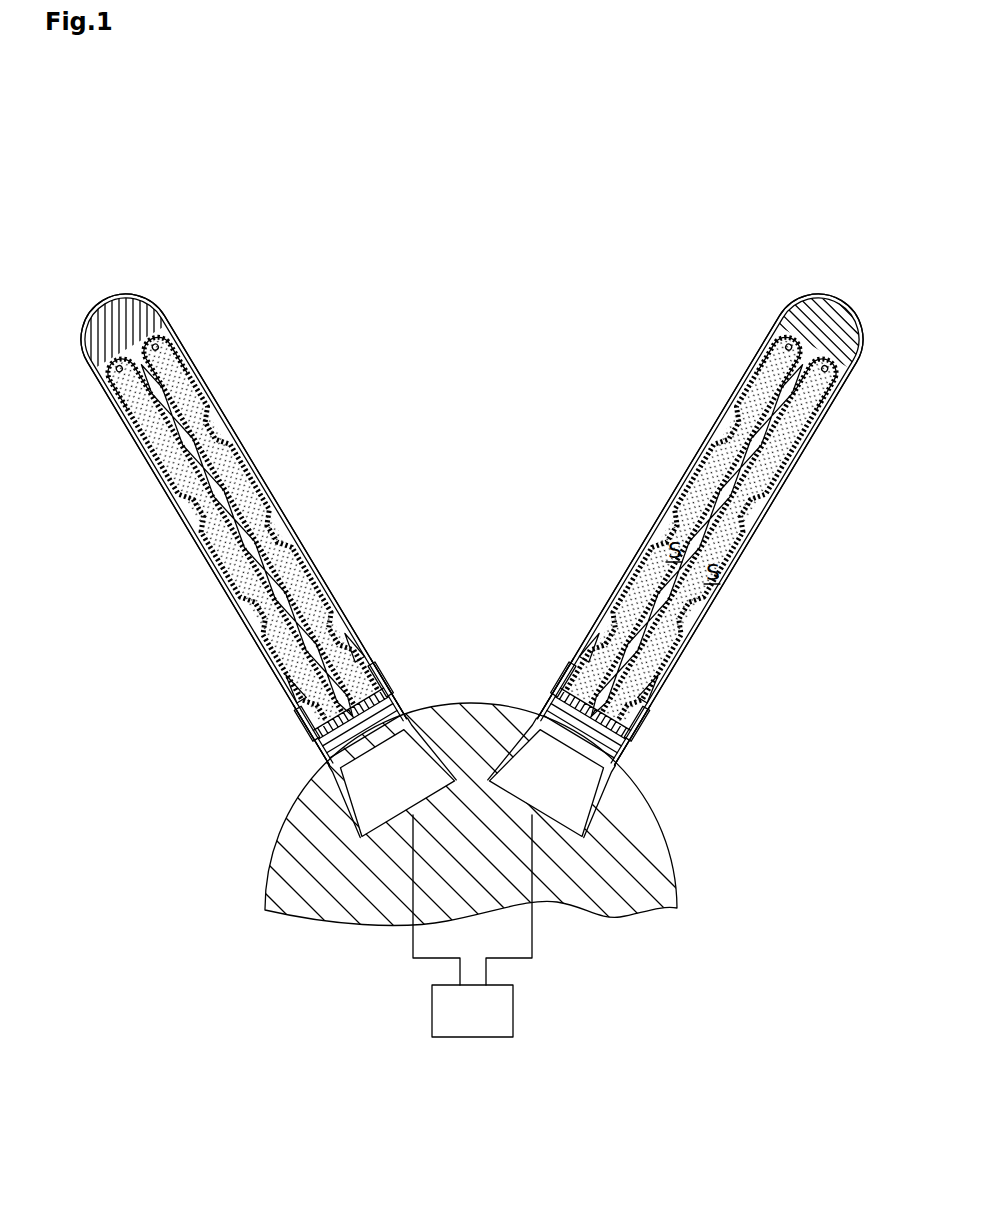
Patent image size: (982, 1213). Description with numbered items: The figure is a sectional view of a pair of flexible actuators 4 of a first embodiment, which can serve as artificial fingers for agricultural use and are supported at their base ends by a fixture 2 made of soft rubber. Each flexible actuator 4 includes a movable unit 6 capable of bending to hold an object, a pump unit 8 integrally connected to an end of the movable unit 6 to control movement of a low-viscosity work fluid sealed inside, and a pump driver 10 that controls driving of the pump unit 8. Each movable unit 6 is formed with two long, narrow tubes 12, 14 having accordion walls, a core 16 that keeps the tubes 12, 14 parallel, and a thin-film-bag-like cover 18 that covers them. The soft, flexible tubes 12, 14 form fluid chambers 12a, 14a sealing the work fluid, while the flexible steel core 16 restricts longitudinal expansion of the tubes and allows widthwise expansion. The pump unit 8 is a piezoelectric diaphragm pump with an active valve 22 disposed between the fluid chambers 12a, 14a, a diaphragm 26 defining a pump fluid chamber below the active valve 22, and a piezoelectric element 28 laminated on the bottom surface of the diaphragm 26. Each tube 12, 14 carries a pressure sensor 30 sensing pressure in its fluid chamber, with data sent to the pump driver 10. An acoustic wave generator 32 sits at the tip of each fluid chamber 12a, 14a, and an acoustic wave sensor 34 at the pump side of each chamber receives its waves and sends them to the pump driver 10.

The fixture 2 is at (275, 815).
The flexible actuator 4 is at (209, 298).
The movable unit 6 is at (266, 462).
The pump unit 8 is at (385, 655).
The pump driver 10 is at (458, 1021).
The tube 12 is at (230, 440).
The fluid chamber 12a is at (763, 377).
The tube 14 is at (235, 563).
The fluid chamber 14a is at (815, 396).
The core 16 is at (774, 494).
The cover 18 is at (745, 540).
The active valve 22 is at (620, 738).
The diaphragm 26 is at (620, 772).
The piezoelectric element 28 is at (603, 801).
The pressure sensor 30 is at (570, 680).
The acoustic wave generator 32 is at (838, 322).
The acoustic wave sensor 34 is at (597, 637).